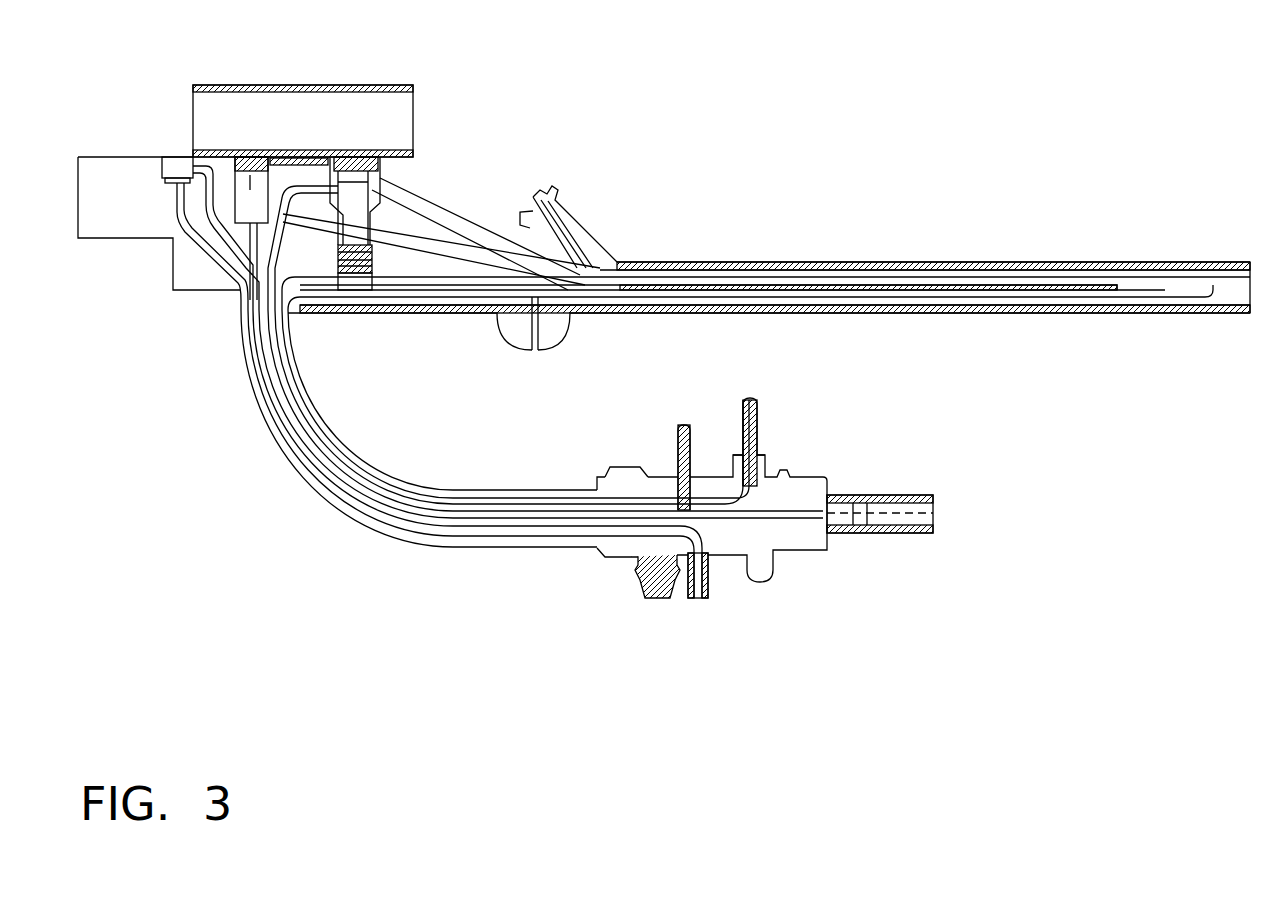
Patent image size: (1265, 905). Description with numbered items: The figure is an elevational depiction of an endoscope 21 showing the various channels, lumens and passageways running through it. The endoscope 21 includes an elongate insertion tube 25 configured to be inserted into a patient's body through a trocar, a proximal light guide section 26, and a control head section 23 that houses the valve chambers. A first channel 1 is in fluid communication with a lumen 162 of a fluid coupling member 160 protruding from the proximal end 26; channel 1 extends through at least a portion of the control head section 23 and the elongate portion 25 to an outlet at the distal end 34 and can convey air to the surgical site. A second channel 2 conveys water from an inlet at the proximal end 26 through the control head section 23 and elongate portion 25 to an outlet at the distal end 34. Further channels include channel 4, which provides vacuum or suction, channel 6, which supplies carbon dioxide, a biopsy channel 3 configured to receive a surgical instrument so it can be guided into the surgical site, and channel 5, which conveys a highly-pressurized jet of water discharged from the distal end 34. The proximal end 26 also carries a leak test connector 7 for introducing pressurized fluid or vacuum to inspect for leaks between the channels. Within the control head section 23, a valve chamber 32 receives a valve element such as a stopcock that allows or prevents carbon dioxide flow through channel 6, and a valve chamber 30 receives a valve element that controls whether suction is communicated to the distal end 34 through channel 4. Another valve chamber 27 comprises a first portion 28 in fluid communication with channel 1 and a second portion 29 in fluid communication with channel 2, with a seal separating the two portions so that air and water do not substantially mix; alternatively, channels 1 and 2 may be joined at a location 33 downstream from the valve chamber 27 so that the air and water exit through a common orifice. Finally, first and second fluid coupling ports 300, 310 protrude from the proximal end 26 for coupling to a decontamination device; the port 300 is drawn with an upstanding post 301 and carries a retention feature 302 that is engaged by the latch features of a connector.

The first channel 1 is at (1117, 282).
The second channel 2 is at (1165, 296).
The biopsy channel 3 is at (528, 213).
The channel 4 is at (700, 600).
The channel 5 is at (537, 352).
The channel 6 is at (658, 468).
The leak test connector 7 is at (652, 600).
The endoscope 21 is at (882, 130).
The control head section 23 is at (447, 117).
The insertion tube 25 is at (843, 262).
The light guide section 26 is at (750, 494).
The valve chamber 27 is at (375, 185).
The first portion 28 is at (355, 157).
The second portion 29 is at (357, 292).
The valve chamber 30 is at (238, 158).
The valve chamber 32 is at (165, 160).
The location 33 is at (1212, 282).
The distal end 34 is at (1250, 264).
The fluid coupling member 160 is at (927, 476).
The lumen 162 is at (935, 513).
The fluid coupling port 300 is at (764, 415).
The post 301 is at (760, 398).
The retention feature 302 is at (734, 455).
The fluid coupling port 310 is at (676, 428).